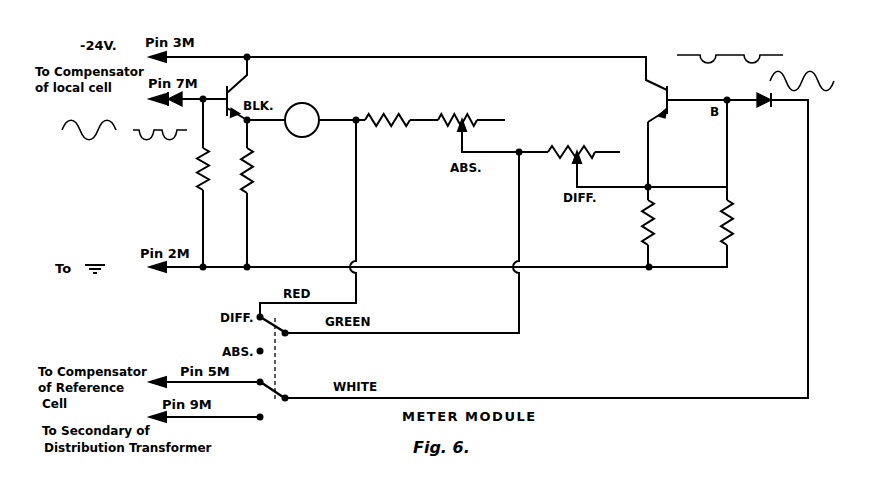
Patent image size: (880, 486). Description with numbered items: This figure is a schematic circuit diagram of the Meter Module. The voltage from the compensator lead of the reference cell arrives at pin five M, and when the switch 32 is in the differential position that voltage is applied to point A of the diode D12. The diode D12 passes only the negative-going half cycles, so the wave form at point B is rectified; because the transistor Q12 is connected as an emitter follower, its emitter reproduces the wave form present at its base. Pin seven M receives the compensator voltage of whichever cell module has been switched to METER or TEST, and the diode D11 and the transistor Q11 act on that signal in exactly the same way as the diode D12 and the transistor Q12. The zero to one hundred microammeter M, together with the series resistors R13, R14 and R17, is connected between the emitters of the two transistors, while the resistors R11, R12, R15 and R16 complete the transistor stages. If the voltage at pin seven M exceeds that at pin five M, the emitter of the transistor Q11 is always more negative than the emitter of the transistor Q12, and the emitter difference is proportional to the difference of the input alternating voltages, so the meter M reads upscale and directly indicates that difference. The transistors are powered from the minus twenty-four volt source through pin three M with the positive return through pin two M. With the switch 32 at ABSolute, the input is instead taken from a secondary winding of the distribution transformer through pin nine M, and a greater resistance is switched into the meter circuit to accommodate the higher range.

The switch 32 is at (278, 364).
The transistor Q11 is at (226, 88).
The transistor Q12 is at (672, 80).
The diode D11 is at (169, 103).
The diode D12 is at (755, 108).
The meter M is at (312, 120).
The resistor R11 is at (197, 171).
The resistor R12 is at (266, 170).
The series resistor R13 is at (402, 92).
The series resistor R14 is at (478, 92).
The resistor R15 is at (651, 208).
The resistor R16 is at (731, 208).
The series resistor R17 is at (553, 143).